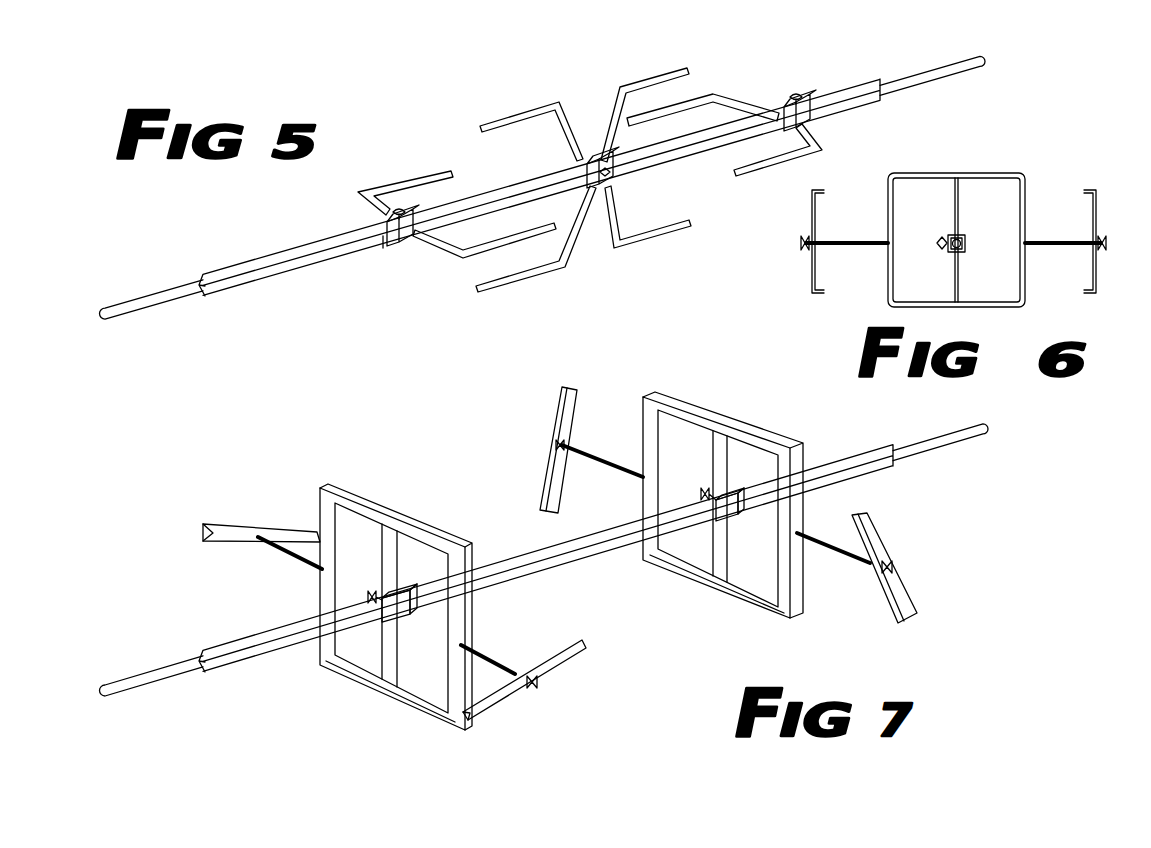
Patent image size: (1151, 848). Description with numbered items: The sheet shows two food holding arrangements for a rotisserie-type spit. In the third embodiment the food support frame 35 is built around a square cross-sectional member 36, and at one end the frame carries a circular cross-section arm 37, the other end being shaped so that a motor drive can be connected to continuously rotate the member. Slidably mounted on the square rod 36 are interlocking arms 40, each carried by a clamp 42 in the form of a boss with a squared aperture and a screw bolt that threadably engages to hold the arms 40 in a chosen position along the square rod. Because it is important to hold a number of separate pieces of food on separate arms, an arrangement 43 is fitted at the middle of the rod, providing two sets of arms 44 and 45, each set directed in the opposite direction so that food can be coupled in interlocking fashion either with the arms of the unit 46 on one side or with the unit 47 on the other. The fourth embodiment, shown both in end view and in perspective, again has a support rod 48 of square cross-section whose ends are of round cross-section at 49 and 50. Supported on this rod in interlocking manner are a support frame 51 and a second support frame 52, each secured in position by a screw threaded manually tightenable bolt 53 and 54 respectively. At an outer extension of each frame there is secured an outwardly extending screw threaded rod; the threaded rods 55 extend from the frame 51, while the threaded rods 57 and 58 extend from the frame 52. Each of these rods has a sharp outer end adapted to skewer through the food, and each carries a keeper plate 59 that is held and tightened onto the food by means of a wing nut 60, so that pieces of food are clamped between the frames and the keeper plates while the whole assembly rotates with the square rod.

In FIG. 5, the food support frame 35 is at (290, 263).
In FIG. 5, the square cross-sectional member 36 is at (367, 240).
In FIG. 5, the circular cross-section arm 37 is at (168, 298).
In FIG. 5, the interlocking arms 40 is at (467, 245).
In FIG. 5, the arm clamp 42 is at (383, 213).
In FIG. 5, the arm arrangement 43 is at (575, 162).
In FIG. 5, the arms 44 is at (545, 107).
In FIG. 5, the arms 45 is at (648, 77).
In FIG. 5, the unit 46 is at (461, 301).
In FIG. 5, the unit 47 is at (725, 218).
In FIG. 7, the support rod 48 is at (870, 468).
In FIG. 7, the round cross-section end 49 is at (151, 684).
In FIG. 7, the round cross-section end 50 is at (940, 440).
In FIG. 6, the support frame 51 is at (975, 173).
In FIG. 7, the support frame 51 is at (430, 538).
In FIG. 7, the support frame 52 is at (743, 421).
In FIG. 6, the screw threaded manually tightenable bolt 53 is at (942, 240).
In FIG. 7, the screw threaded manually tightenable bolt 53 is at (370, 593).
In FIG. 7, the screw threaded manually tightenable bolt 54 is at (703, 495).
In FIG. 6, the screw threaded rod 55 is at (1053, 240).
In FIG. 7, the screw threaded rod 55 is at (304, 560).
In FIG. 7, the screw threaded rod 57 is at (830, 548).
In FIG. 7, the screw threaded rod 58 is at (606, 459).
In FIG. 6, the keeper plate 59 is at (812, 262).
In FIG. 7, the keeper plate 59 is at (238, 532).
In FIG. 6, the wing nut 60 is at (1104, 250).
In FIG. 7, the wing nut 60 is at (536, 688).